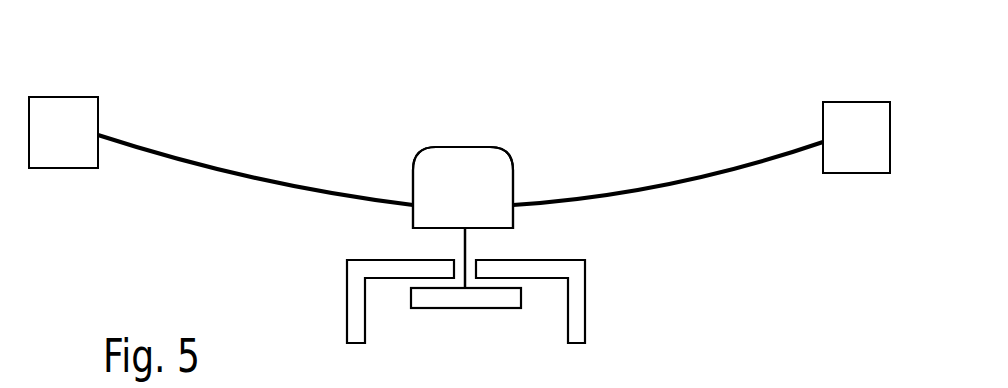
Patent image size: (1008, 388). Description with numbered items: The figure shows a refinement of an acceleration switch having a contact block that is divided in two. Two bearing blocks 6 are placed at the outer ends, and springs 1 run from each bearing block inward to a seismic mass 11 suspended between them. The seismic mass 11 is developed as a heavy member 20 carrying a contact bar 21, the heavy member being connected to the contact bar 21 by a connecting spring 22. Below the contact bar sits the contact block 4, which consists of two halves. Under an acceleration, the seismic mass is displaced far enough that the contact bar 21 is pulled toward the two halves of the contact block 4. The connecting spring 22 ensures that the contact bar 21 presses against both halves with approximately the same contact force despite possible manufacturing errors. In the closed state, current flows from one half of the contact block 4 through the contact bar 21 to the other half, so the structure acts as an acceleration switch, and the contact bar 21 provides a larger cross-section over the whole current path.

The springs 1 is at (248, 177).
The bearing blocks 6 is at (70, 103).
The seismic mass 11 is at (446, 142).
The heavy member 20 is at (490, 165).
The connecting spring 22 is at (465, 245).
The contact bar 21 is at (462, 302).
The contact block 4 is at (355, 292).